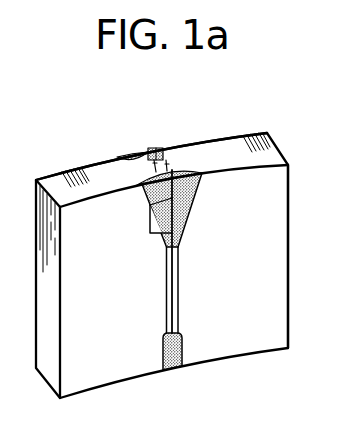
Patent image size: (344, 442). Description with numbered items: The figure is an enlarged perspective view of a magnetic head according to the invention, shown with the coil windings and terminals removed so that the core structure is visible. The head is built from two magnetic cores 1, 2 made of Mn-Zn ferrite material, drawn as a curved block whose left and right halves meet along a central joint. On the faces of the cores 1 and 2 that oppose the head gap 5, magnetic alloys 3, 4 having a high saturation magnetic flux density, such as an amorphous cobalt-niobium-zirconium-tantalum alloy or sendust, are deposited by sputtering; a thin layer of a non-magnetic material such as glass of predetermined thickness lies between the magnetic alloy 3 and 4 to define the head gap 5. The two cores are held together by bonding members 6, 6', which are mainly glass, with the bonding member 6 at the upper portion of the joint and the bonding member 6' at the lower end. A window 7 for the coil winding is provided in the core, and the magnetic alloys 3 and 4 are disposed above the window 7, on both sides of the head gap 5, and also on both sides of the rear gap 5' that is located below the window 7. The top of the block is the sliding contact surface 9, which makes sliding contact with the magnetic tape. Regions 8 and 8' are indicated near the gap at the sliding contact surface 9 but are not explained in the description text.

The magnetic core 1 is at (110, 371).
The magnetic core 2 is at (238, 349).
The magnetic alloy 3 is at (152, 146).
The magnetic alloy 4 is at (168, 163).
The head gap 5 is at (159, 128).
The rear gap 5' is at (198, 251).
The bonding member 6 is at (161, 177).
The bonding member 6' is at (172, 378).
The window for coil winding 7 is at (150, 228).
The surface weld deposit 8 is at (119, 172).
The connecting neck 8' is at (192, 156).
The sliding contact surface 9 is at (258, 140).